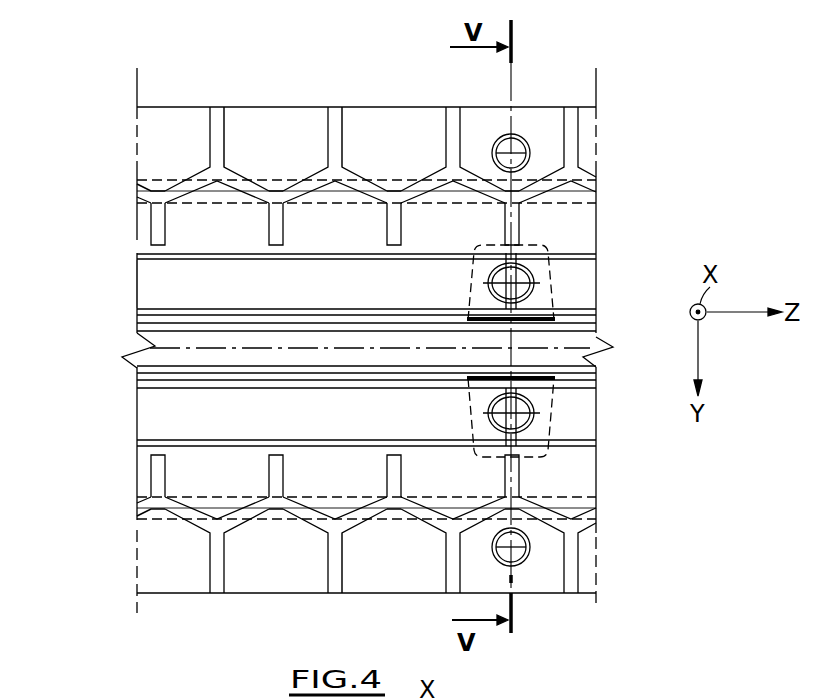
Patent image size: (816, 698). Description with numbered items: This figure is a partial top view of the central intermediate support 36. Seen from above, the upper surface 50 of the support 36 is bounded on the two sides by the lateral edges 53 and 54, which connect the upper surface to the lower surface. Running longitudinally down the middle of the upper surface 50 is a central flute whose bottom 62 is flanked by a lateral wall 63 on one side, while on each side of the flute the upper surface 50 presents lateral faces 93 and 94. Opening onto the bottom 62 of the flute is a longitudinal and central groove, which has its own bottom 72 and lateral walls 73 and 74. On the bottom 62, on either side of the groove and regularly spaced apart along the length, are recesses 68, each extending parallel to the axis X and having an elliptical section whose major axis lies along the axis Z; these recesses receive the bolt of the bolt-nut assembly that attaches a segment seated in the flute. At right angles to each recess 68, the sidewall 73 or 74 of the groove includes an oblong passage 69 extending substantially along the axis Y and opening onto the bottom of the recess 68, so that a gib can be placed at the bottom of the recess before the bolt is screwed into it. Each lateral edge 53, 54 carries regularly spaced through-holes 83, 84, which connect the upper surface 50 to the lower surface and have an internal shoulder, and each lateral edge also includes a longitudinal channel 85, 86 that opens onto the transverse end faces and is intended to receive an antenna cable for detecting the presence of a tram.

The central intermediate support 36 is at (96, 188).
The upper surface 50 is at (279, 158).
The lateral edge 53 is at (543, 105).
The lateral edge 54 is at (547, 598).
The bottom of the flute 62 is at (362, 291).
The lateral wall of the flute 63 is at (183, 260).
The recess 68 is at (522, 280).
The passage 69 is at (547, 250).
The bottom of the groove 72 is at (362, 359).
The lateral wall of the groove 73 is at (187, 319).
The lateral wall of the groove 74 is at (160, 380).
The through-hole 83 is at (515, 157).
The through-hole 84 is at (185, 445).
The channel 85 is at (577, 197).
The channel 86 is at (137, 510).
The lateral face 93 is at (388, 142).
The lateral face 94 is at (395, 567).